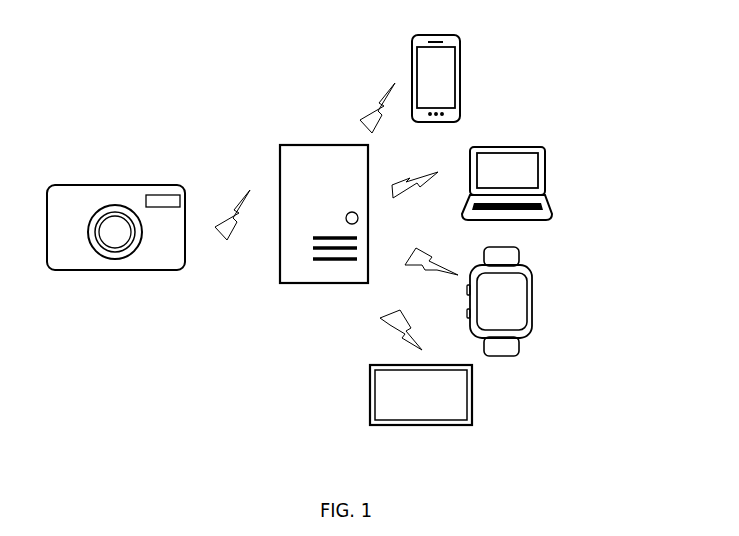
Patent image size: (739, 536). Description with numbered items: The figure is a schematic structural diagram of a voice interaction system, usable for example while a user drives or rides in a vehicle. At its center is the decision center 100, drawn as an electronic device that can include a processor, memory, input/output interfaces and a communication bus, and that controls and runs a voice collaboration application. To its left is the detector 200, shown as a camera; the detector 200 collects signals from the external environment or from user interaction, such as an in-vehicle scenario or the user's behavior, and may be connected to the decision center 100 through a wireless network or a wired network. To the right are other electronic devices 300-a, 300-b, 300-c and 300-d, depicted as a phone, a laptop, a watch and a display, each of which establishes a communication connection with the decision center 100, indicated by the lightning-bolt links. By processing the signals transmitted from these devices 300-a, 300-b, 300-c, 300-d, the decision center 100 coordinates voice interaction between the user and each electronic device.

The detector 200 is at (116, 251).
The decision center 100 is at (324, 234).
The electronic device 300-a is at (482, 78).
The electronic device 300-b is at (548, 183).
The electronic device 300-c is at (547, 301).
The electronic device 300-d is at (421, 414).